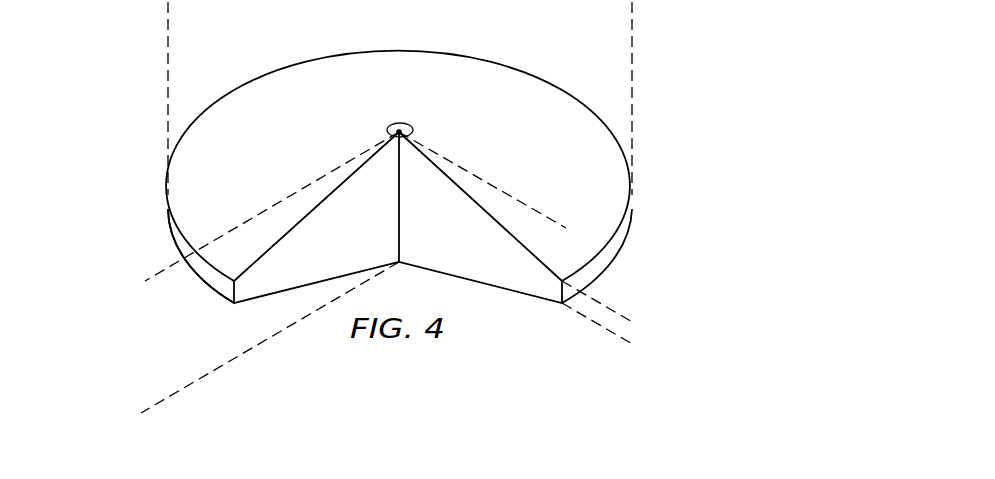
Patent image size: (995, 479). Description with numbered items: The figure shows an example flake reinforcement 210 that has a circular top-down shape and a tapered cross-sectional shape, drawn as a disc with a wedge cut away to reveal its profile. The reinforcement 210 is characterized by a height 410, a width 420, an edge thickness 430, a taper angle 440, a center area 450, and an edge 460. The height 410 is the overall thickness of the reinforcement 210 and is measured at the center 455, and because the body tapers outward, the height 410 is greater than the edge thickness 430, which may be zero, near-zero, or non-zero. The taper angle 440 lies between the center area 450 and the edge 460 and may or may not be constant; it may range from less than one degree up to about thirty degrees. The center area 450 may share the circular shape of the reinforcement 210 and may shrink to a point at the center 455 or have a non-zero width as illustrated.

The flake reinforcement 210 is at (672, 159).
The width 420 is at (632, 28).
The center 455 is at (400, 129).
The center area 450 is at (388, 129).
The taper angle 440 is at (523, 243).
The edge 460 is at (180, 248).
The height 410 is at (161, 399).
The edge thickness 430 is at (623, 316).